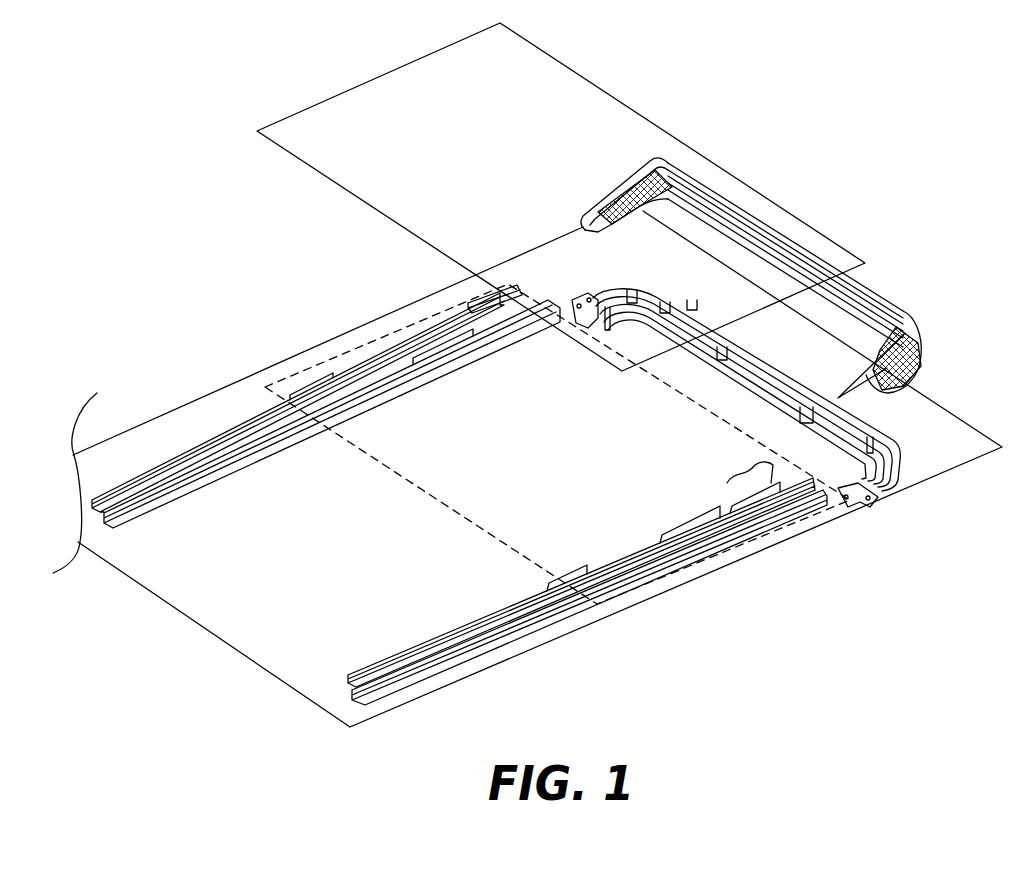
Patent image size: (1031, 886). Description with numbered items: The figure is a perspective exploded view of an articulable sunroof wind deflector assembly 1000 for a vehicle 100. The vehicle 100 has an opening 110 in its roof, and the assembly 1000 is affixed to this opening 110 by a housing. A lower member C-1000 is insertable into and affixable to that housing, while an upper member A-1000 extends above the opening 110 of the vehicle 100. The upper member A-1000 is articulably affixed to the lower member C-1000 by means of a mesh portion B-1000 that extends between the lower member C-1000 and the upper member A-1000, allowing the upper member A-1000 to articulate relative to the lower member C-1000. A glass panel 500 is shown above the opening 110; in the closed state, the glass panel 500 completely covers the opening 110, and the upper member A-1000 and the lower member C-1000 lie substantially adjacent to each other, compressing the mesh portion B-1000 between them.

The vehicle 100 is at (166, 340).
The opening 110 is at (957, 415).
The glass panel 500 is at (312, 106).
The articulable sunroof wind deflector assembly 1000 is at (786, 282).
The upper member A-1000 is at (905, 330).
The mesh portion B-1000 is at (880, 388).
The lower member C-1000 is at (920, 365).